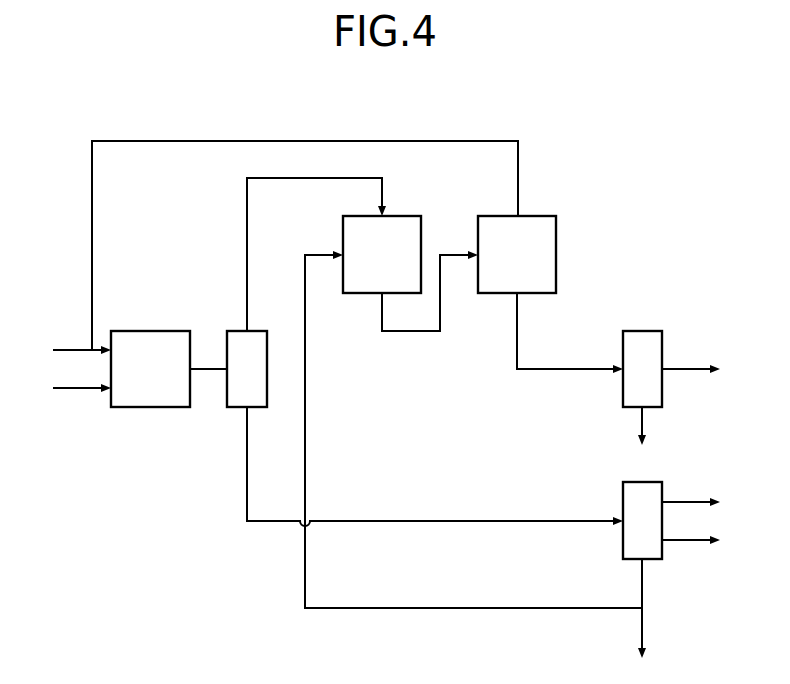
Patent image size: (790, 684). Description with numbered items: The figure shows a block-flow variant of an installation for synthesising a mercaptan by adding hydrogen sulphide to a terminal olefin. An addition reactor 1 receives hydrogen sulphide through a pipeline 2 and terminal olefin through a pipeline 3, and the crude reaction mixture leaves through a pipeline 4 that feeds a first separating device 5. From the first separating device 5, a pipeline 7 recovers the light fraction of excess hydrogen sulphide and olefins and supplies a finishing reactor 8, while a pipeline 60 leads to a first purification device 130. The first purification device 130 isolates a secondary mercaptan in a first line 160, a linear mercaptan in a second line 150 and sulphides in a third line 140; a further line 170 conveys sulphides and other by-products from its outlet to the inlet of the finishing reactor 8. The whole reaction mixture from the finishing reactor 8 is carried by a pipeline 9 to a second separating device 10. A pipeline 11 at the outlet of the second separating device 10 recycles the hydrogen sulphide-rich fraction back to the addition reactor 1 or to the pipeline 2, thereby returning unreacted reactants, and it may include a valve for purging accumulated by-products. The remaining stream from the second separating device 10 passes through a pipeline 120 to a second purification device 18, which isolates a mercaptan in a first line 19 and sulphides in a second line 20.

The addition reactor 1 is at (150, 409).
The pipeline 2 is at (57, 346).
The pipeline 3 is at (57, 398).
The pipeline 4 is at (206, 372).
The first separating device 5 is at (247, 369).
The pipeline 7 is at (246, 256).
The finishing reactor 8 is at (342, 234).
The pipeline 9 is at (410, 333).
The second separating device 10 is at (557, 252).
The pipeline 11 is at (323, 140).
The second purification device 18 is at (642, 369).
The first line 19 is at (690, 364).
The second line 20 is at (641, 427).
The pipeline 60 is at (410, 524).
The pipeline 120 is at (518, 330).
The first purification device 130 is at (642, 520).
The third line 140 is at (640, 640).
The second line 150 is at (690, 545).
The first line 160 is at (690, 498).
The line 170 is at (410, 610).